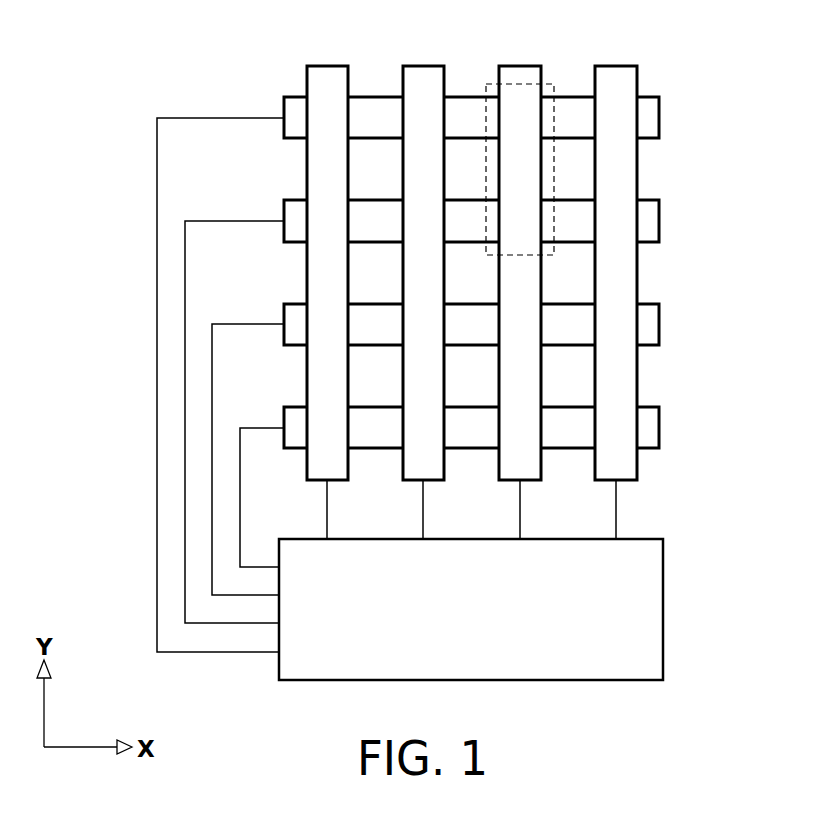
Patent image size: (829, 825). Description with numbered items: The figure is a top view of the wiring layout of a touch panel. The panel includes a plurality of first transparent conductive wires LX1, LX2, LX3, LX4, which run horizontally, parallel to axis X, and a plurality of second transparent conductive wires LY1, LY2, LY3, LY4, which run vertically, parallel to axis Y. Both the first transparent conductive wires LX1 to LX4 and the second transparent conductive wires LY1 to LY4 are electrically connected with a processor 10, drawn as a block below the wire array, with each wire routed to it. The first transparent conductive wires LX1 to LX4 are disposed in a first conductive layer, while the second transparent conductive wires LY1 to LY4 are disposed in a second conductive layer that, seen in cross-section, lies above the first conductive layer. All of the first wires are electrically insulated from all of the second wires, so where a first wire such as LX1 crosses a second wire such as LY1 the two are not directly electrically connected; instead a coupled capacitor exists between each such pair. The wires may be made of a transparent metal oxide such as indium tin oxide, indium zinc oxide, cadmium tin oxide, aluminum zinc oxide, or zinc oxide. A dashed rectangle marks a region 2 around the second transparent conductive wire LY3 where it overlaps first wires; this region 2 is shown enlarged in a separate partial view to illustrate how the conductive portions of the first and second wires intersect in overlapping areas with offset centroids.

The region 2 is at (567, 105).
The processor 10 is at (458, 636).
The first transparent conductive wire LX1 is at (662, 118).
The first transparent conductive wire LX2 is at (662, 221).
The first transparent conductive wire LX3 is at (662, 324).
The first transparent conductive wire LX4 is at (662, 428).
The second transparent conductive wire LY1 is at (327, 64).
The second transparent conductive wire LY2 is at (423, 64).
The second transparent conductive wire LY3 is at (520, 64).
The second transparent conductive wire LY4 is at (616, 64).